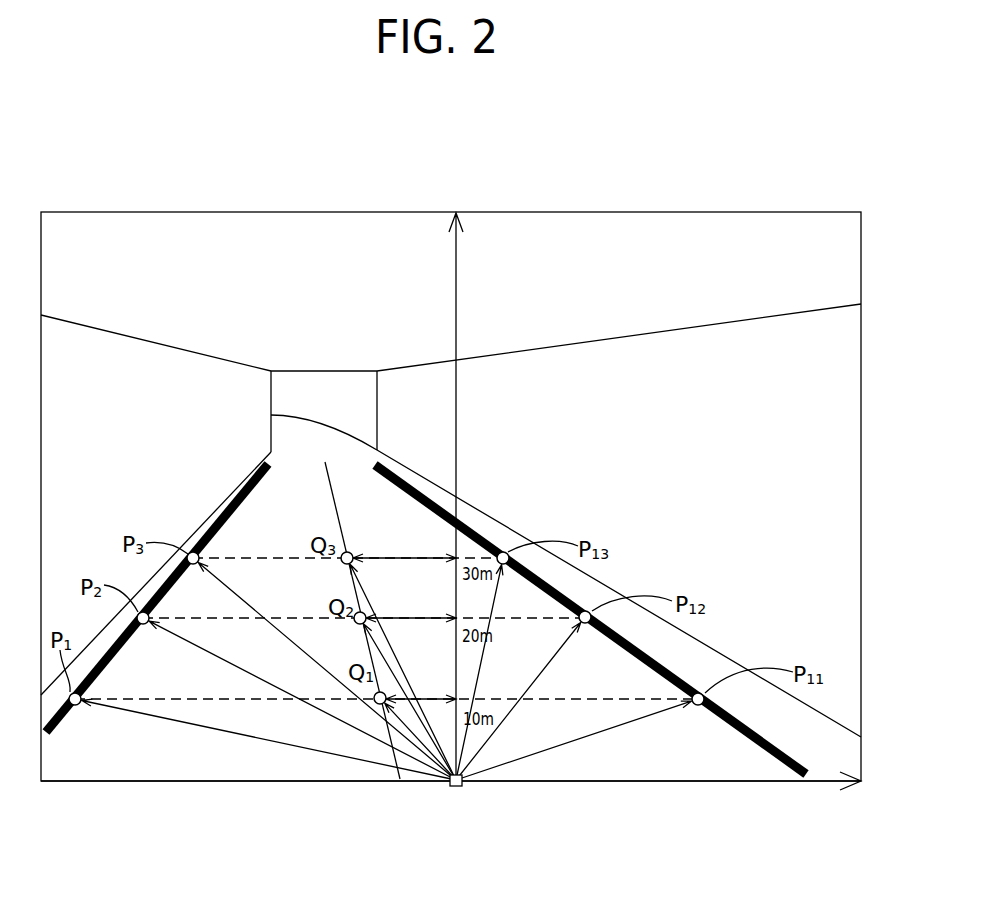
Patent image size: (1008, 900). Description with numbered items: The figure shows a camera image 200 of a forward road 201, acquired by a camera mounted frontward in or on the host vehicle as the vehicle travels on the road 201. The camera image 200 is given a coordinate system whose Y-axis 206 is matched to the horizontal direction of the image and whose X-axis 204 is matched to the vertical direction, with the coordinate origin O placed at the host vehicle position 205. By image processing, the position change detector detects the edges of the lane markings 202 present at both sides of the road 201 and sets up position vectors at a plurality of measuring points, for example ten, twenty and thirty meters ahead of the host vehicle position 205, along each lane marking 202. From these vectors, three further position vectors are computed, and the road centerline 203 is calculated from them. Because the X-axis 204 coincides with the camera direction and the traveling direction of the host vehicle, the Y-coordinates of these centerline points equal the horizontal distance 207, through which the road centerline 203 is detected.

The camera image 200 is at (738, 212).
The forward road 201 is at (312, 437).
The lane markings 202 is at (63, 726).
The road centerline 203 is at (330, 503).
The X-axis 204 is at (458, 403).
The host vehicle position 205 is at (462, 786).
The Y-axis 206 is at (655, 782).
The horizontal distance 207 is at (405, 555).